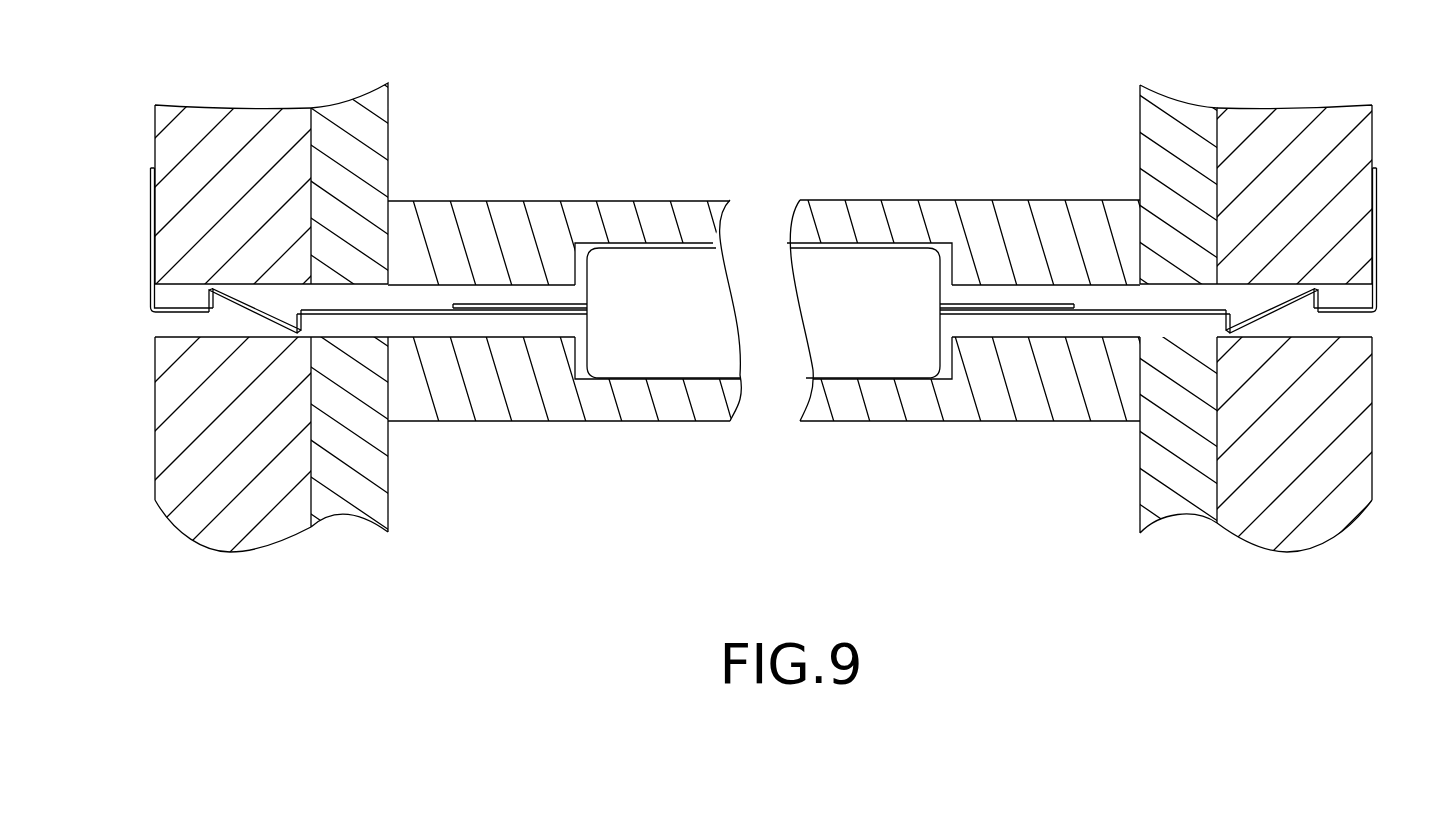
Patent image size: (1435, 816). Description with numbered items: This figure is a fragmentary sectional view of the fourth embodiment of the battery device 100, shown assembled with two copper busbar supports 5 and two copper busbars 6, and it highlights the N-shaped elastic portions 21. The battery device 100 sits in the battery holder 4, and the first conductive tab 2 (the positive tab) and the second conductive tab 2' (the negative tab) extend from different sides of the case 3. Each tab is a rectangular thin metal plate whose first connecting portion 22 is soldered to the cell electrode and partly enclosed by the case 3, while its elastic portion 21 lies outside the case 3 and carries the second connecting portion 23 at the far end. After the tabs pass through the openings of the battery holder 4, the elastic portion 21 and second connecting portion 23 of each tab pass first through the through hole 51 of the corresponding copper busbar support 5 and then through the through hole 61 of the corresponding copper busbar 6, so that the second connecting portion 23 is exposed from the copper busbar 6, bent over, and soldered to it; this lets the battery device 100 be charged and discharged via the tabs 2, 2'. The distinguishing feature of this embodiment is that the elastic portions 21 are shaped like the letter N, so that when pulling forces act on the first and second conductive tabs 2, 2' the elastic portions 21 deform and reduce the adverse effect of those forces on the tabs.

The first conductive tab 2 is at (1026, 226).
The second conductive tab 2' is at (500, 226).
The case 3 is at (660, 246).
The battery holder 4 is at (519, 200).
The copper busbar support 5 is at (350, 122).
The copper busbar 6 is at (232, 135).
The elastic portion 21 is at (258, 305).
The first connecting portion 22 is at (400, 315).
The second connecting portion 23 is at (150, 193).
The through hole of copper busbar support 51 is at (338, 327).
The through hole of copper busbar 61 is at (168, 324).
The battery device 100 is at (625, 245).